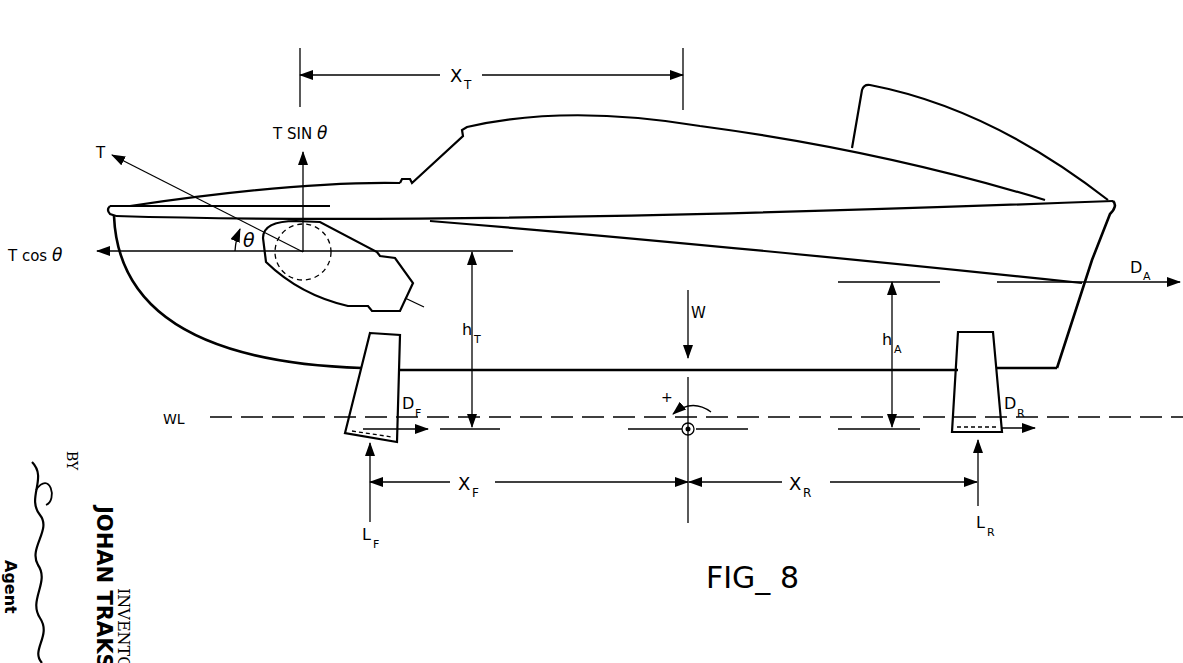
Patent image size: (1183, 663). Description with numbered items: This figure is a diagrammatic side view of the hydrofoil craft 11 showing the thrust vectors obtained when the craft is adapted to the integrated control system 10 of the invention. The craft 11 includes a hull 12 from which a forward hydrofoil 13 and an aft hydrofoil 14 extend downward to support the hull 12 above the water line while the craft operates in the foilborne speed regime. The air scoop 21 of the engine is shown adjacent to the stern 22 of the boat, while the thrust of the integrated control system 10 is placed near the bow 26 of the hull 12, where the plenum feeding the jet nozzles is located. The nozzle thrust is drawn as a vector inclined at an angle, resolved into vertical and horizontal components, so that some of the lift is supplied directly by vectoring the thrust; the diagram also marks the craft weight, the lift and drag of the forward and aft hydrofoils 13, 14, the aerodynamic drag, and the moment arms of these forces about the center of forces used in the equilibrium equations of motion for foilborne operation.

The integrated control system 10 is at (317, 298).
The hydrofoil craft 11 is at (163, 305).
The hull 12 is at (365, 183).
The forward hydrofoil 13 is at (358, 440).
The aft hydrofoil 14 is at (986, 437).
The air scoop 21 is at (870, 86).
The stern 22 is at (1068, 325).
The bow 26 is at (216, 193).